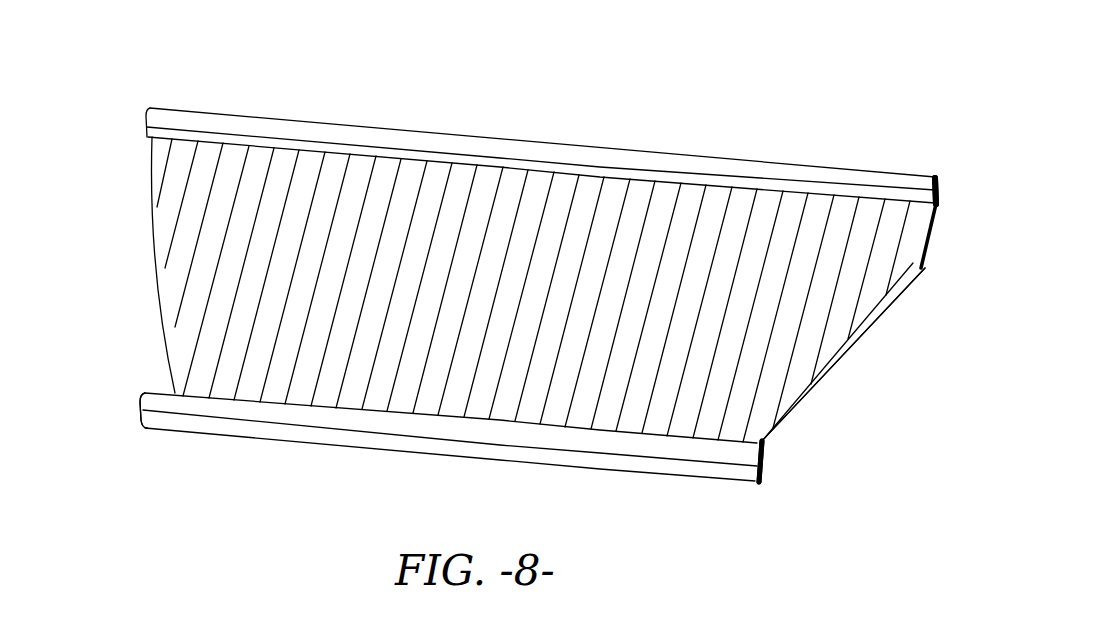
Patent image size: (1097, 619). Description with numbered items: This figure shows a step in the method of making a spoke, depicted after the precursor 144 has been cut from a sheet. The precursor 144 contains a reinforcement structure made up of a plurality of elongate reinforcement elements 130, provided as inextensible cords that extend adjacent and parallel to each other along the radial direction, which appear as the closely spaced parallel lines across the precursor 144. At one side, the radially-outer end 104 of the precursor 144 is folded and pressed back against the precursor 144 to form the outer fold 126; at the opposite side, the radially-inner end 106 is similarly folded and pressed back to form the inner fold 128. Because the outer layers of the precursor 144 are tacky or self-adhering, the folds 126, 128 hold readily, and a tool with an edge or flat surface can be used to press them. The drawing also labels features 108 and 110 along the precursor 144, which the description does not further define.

The radially-outer end 104 is at (133, 117).
The radially-inner end 106 is at (125, 396).
The first side wall 108 is at (153, 261).
The second side wall 110 is at (881, 315).
The outer fold 126 is at (935, 177).
The inner fold 128 is at (160, 405).
The reinforcement elements 130 is at (392, 212).
The precursor 144 is at (598, 118).